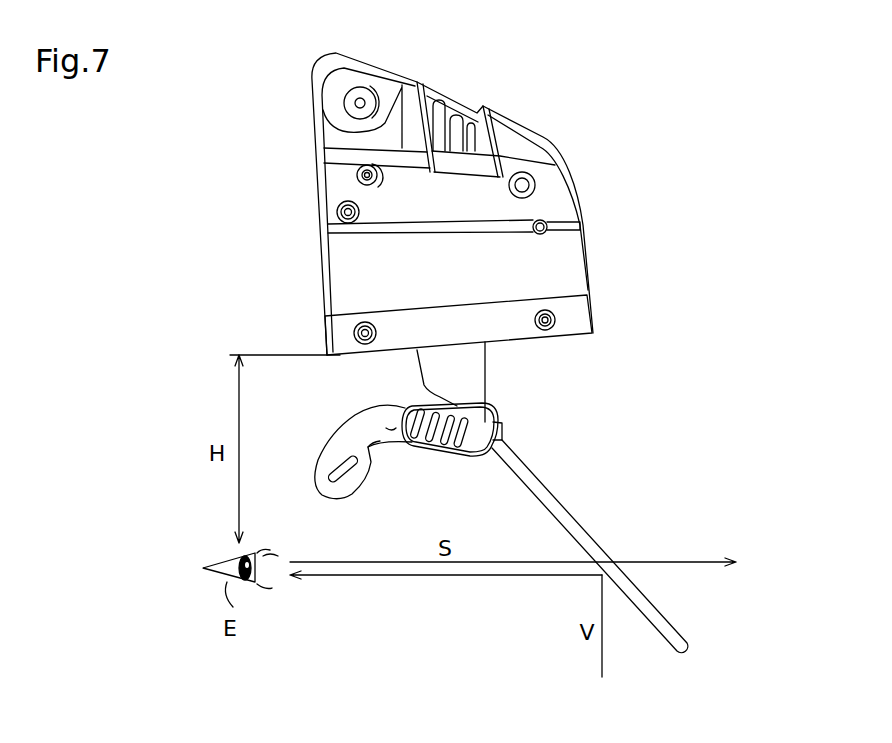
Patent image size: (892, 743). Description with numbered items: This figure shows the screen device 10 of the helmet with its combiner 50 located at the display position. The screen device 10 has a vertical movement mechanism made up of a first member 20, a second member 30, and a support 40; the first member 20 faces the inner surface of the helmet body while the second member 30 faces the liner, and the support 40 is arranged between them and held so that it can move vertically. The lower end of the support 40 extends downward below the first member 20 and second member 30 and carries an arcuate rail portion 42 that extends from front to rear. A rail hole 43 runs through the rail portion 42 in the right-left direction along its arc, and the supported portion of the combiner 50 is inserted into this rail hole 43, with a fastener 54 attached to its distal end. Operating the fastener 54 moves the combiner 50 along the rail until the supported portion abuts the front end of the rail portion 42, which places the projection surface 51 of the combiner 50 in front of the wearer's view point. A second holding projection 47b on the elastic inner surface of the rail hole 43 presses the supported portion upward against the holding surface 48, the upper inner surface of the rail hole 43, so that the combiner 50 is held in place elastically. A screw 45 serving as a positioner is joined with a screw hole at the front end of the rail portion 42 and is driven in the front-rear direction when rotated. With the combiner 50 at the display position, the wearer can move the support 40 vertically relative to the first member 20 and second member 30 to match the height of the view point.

The screen device 10 is at (427, 204).
The first member 20 is at (570, 272).
The second member 30 is at (572, 137).
The support 40 is at (472, 497).
The rail portion 42 is at (318, 492).
The rail hole 43 is at (368, 446).
The screw 45 is at (503, 426).
The second holding projection 47b is at (333, 448).
The holding surface 48 is at (392, 427).
The combiner 50 is at (591, 546).
The projection surface 51 is at (562, 498).
The fastener 54 is at (453, 453).